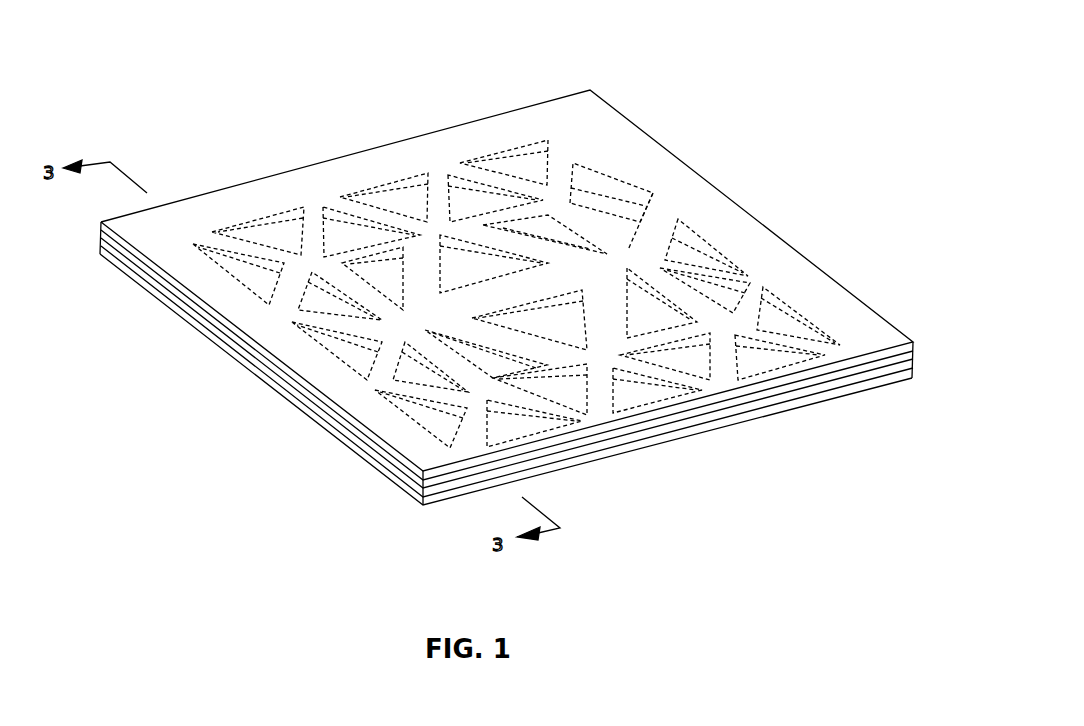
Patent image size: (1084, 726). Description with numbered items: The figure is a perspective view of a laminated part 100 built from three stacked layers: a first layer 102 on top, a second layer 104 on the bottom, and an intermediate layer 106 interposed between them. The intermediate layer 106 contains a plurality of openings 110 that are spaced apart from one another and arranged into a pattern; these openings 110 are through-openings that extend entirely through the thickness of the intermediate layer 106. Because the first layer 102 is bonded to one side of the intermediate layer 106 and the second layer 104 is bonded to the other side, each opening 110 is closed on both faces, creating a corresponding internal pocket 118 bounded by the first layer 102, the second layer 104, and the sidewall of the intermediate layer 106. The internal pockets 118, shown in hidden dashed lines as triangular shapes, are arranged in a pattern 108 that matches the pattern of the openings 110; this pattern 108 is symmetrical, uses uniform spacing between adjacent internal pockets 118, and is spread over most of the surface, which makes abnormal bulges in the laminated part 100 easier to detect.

The laminated part 100 is at (658, 64).
The first layer 102 is at (912, 341).
The second layer 104 is at (910, 376).
The intermediate layer 106 is at (907, 359).
The pattern 108 is at (660, 180).
The openings 110 is at (598, 152).
The internal pockets 118 is at (578, 165).